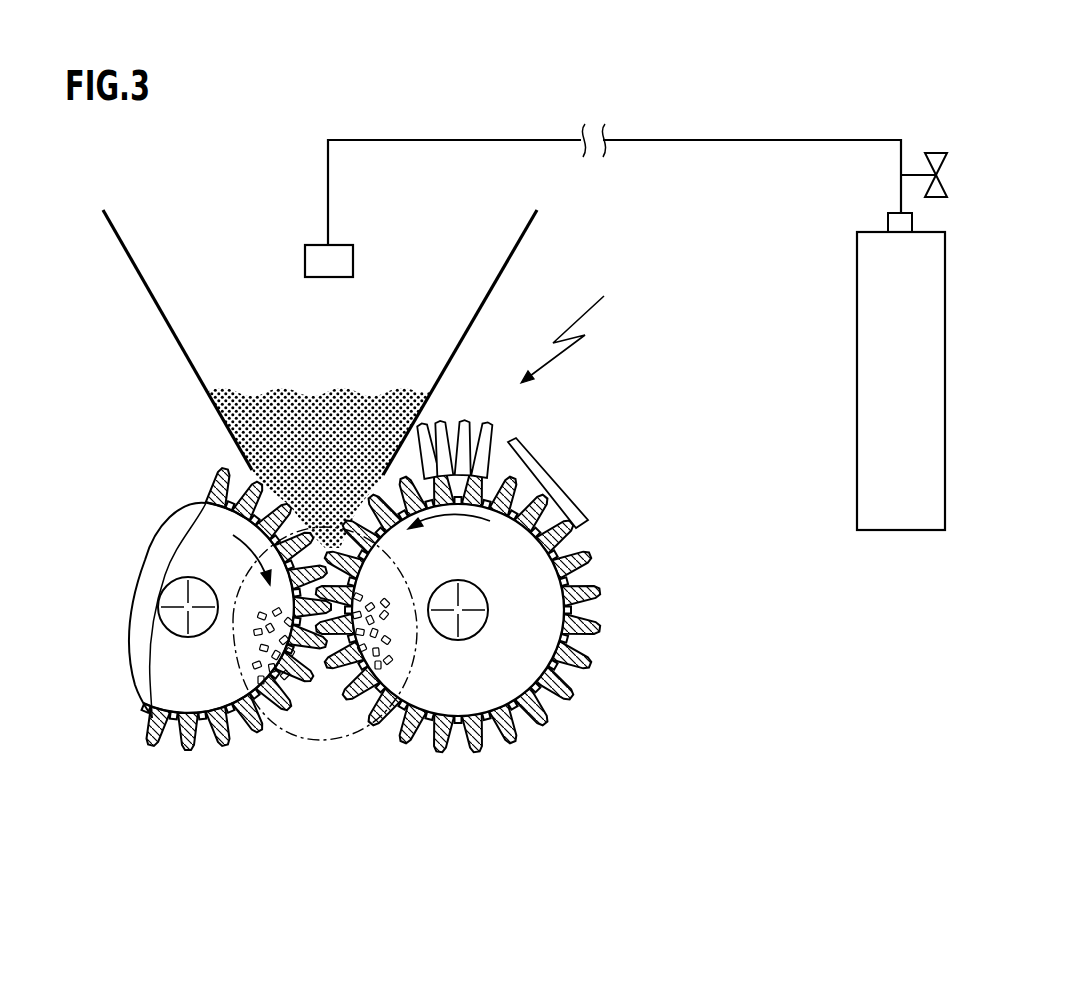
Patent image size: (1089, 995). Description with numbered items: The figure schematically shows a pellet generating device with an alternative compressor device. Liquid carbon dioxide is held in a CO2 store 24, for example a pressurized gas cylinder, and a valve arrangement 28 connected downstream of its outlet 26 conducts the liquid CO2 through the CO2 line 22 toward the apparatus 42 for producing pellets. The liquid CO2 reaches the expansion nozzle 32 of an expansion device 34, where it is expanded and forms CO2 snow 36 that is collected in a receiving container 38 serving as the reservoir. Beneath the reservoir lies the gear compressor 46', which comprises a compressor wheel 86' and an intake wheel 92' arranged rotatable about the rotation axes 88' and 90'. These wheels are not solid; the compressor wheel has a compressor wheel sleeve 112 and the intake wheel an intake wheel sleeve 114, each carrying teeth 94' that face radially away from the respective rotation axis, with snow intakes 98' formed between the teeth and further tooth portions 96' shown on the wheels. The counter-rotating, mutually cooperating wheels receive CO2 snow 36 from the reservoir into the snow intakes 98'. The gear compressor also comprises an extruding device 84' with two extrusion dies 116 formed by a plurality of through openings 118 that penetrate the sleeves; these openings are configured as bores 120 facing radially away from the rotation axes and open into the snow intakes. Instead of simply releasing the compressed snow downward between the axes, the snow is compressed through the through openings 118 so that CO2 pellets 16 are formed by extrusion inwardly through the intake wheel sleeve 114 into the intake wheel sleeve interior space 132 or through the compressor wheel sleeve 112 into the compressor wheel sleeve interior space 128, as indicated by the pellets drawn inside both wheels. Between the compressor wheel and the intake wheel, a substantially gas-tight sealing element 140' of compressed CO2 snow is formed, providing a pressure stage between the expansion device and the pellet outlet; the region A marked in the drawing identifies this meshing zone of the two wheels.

The CO2 pellets 16 is at (383, 655).
The CO2 line 22 is at (712, 137).
The CO2 store 24 is at (918, 305).
The outlet 26 is at (905, 225).
The valve arrangement 28 is at (948, 160).
The expansion nozzle 32 is at (340, 266).
The expansion device 34 is at (318, 316).
The CO2 snow 36 is at (290, 420).
The receiving container 38 is at (213, 345).
The apparatus for producing CO2 pellets 42 is at (500, 132).
The gear compressor 46' is at (568, 322).
The extruding device 84' is at (151, 703).
The compressor wheel 86' is at (202, 577).
The rotation axis 88' is at (146, 598).
The rotation axis 90' is at (486, 590).
The intake wheel 92' is at (387, 578).
The teeth 94' is at (479, 673).
The tooth 96' is at (435, 676).
The snow intakes 98' is at (441, 767).
The compressor wheel sleeve 112 is at (207, 497).
The intake wheel sleeve 114 is at (593, 657).
The extrusion dies 116 is at (550, 590).
The through openings 118 is at (548, 483).
The bores 120 is at (539, 457).
The compressor wheel sleeve interior space 128 is at (164, 673).
The intake wheel sleeve interior space 132 is at (465, 703).
The sealing element 140' is at (358, 633).
The detail region A is at (322, 745).